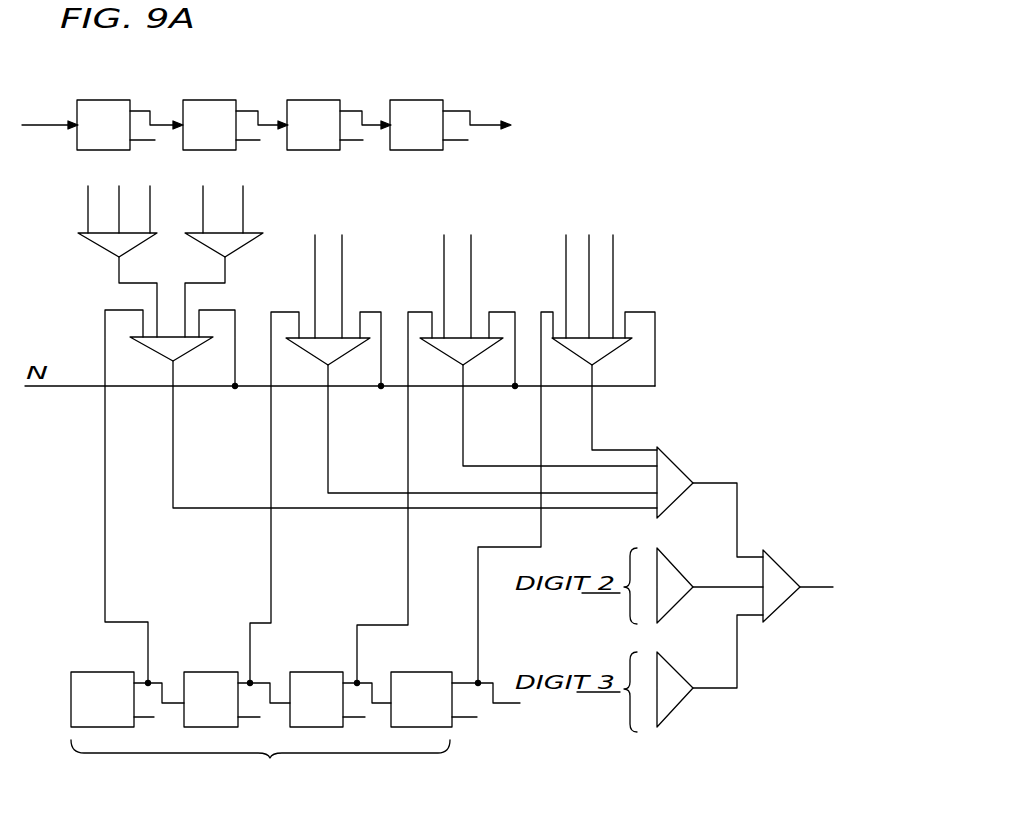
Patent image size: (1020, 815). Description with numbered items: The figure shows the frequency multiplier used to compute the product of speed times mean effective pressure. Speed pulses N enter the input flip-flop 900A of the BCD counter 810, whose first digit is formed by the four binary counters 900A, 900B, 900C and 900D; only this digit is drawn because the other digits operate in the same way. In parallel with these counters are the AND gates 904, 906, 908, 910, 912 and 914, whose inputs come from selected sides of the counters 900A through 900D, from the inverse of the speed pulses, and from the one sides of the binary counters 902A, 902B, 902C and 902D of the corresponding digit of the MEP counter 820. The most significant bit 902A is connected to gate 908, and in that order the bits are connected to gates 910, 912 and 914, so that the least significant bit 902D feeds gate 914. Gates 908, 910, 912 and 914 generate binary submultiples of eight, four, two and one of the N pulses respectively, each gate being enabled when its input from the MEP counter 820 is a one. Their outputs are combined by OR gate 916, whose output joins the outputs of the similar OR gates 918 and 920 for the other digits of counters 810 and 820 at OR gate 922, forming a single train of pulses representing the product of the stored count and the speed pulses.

The MEP counter 820 is at (550, 84).
The BCD counter 810 is at (292, 717).
The input flip-flop 900A is at (77, 140).
The binary counter 900B is at (222, 150).
The binary counter 900C is at (342, 150).
The binary counter 900D is at (400, 150).
The binary counter 902A is at (86, 662).
The binary counter 902B is at (240, 660).
The binary counter 902C is at (333, 660).
The binary counter 902D is at (400, 672).
The AND gate 904 is at (108, 241).
The AND gate 906 is at (241, 240).
The AND gate 908 is at (153, 344).
The AND gate 910 is at (300, 344).
The AND gate 912 is at (436, 344).
The AND gate 914 is at (570, 344).
The OR gate 916 is at (674, 459).
The OR gate 918 is at (670, 566).
The OR gate 920 is at (691, 660).
The OR gate 922 is at (798, 572).